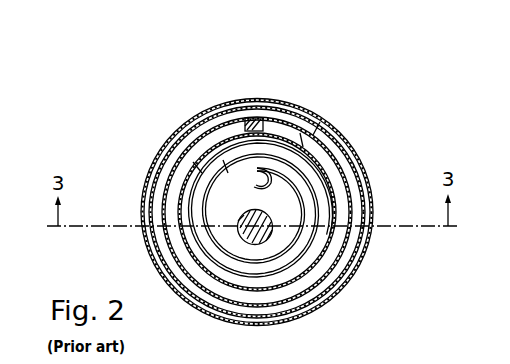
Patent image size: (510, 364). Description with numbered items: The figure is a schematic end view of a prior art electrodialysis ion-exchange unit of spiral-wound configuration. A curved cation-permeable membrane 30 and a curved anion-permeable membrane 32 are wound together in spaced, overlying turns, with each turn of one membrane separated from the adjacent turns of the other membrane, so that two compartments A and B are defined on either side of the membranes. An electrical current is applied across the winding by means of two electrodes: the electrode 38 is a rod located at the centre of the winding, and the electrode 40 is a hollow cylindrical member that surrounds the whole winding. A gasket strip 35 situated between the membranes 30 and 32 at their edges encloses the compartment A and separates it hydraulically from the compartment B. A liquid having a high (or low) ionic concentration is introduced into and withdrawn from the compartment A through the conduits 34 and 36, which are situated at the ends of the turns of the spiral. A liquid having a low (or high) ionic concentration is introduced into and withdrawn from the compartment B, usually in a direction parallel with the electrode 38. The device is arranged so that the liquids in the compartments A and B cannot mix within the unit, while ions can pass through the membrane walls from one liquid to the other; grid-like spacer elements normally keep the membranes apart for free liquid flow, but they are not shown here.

The curved cation-permeable membrane 30 is at (318, 124).
The curved anion-permeable membrane 32 is at (342, 141).
The conduit 34 is at (222, 176).
The gasket strip 35 is at (262, 172).
The conduit 36 is at (263, 120).
The electrode 38 is at (265, 220).
The electrode 40 is at (372, 193).
The compartment A is at (183, 218).
The compartment B is at (170, 172).